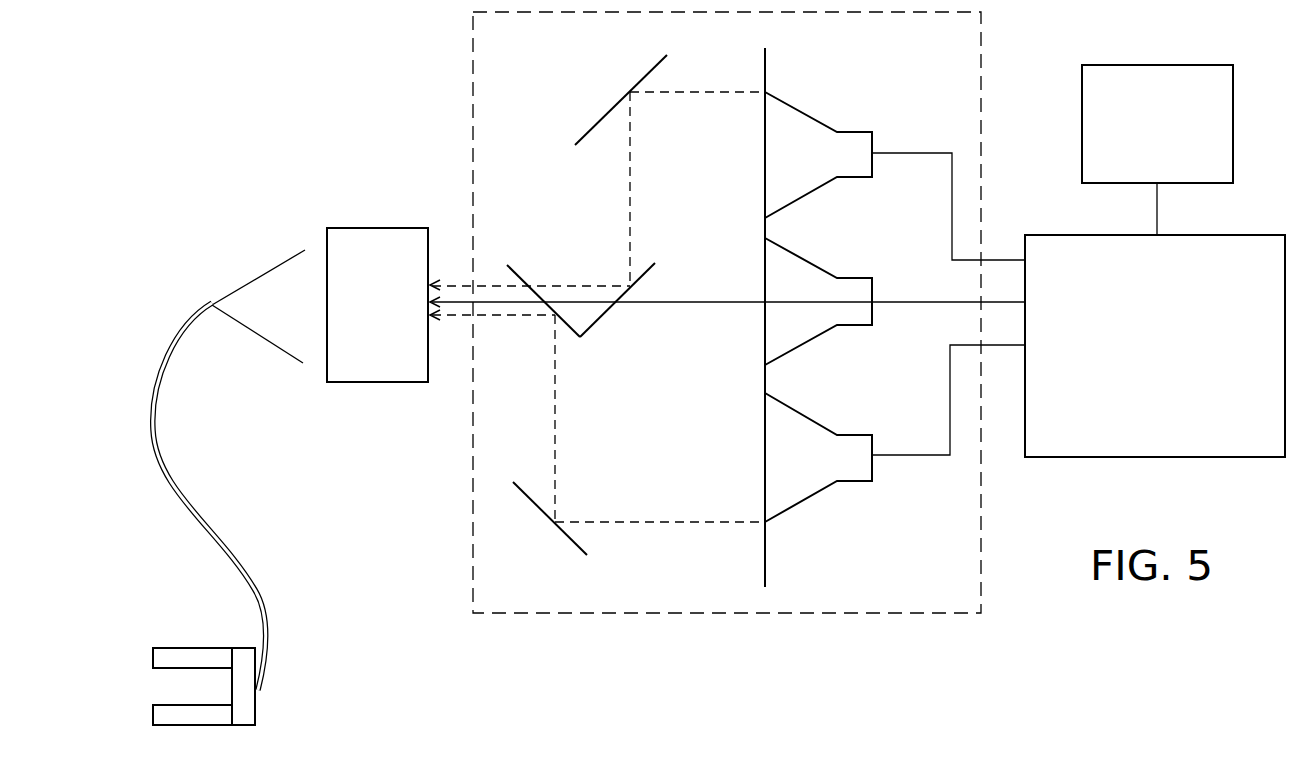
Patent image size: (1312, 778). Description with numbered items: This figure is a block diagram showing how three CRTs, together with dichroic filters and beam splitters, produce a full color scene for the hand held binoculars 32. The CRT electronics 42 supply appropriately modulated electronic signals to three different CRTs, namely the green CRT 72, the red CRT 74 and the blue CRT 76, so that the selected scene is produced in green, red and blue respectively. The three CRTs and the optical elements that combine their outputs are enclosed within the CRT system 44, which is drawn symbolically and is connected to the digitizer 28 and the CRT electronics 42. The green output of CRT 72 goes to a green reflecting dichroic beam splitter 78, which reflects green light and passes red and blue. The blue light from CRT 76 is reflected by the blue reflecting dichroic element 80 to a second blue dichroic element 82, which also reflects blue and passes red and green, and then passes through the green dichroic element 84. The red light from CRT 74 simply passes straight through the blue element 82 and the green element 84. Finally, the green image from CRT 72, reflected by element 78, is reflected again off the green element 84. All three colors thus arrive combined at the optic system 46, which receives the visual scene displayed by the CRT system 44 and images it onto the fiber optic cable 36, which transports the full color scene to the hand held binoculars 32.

The CRT system 44 is at (468, 63).
The blue reflecting dichroic element 80 is at (617, 107).
The green dichroic element 84 is at (514, 262).
The second blue dichroic element 82 is at (607, 315).
The green reflecting dichroic beam splitter 78 is at (557, 532).
The blue CRT 76 is at (822, 188).
The red CRT 74 is at (828, 343).
The green CRT 72 is at (808, 498).
The CRT electronics 42 is at (1168, 434).
The digitizer 28 is at (1138, 164).
The optic system 46 is at (377, 382).
The fiber optic cable 36 is at (240, 537).
The hand held binoculars 32 is at (256, 710).